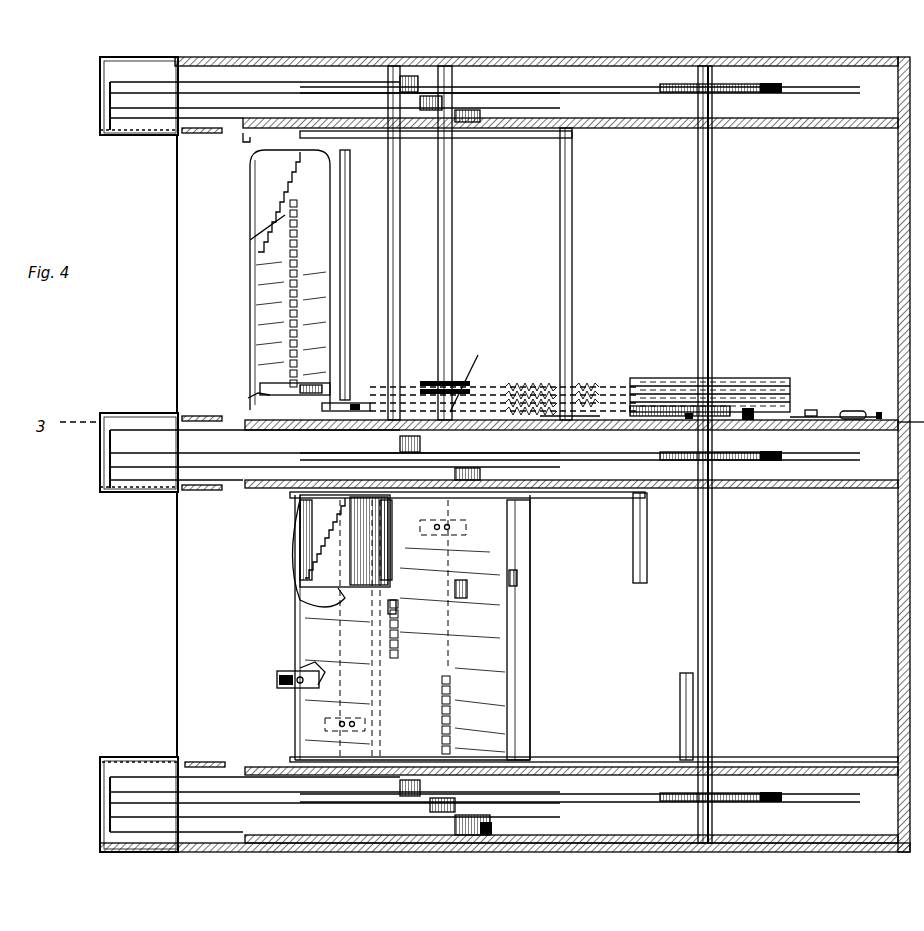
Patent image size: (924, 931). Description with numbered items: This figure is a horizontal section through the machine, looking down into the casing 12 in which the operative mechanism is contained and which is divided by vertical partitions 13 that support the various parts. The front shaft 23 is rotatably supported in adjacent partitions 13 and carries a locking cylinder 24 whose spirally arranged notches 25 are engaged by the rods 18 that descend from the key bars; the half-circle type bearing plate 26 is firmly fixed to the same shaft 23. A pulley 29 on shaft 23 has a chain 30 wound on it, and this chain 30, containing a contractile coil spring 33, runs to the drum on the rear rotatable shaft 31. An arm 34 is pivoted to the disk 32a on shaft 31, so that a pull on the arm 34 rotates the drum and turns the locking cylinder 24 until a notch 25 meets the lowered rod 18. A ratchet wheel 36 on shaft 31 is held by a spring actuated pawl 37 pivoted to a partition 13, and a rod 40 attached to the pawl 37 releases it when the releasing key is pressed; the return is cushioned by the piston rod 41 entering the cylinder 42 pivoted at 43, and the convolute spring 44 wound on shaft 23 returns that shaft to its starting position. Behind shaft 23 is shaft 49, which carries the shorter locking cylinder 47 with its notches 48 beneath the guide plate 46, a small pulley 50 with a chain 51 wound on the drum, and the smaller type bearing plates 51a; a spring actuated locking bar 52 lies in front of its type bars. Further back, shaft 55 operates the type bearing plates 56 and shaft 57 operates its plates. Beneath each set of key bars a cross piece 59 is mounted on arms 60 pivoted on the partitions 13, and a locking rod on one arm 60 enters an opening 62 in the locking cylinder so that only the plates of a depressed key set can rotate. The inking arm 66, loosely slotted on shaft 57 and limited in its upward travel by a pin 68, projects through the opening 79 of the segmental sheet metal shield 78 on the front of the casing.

The casing 12 is at (897, 612).
The vertical partitions 13 is at (840, 118).
The rod 18 is at (290, 312).
The shaft 23 is at (260, 395).
The locking cylinder 24 is at (262, 186).
The notches 25 is at (279, 202).
The type bearing plate 26 is at (140, 95).
The pulley 29 is at (314, 384).
The chain 30 is at (478, 395).
The rotatable shaft 31 is at (712, 309).
The disk 32a is at (780, 90).
The contractile coil spring 33 is at (532, 386).
The arm 34 is at (522, 96).
The ratchet wheel 36 is at (747, 421).
The spring actuated pawl 37 is at (689, 421).
The rod 40 is at (528, 430).
The piston rod 41 is at (813, 410).
The cylinder 42 is at (852, 411).
The pivot 43 is at (878, 420).
The convolute spring 44 is at (288, 683).
The guide plate 46 is at (345, 622).
The locking cylinder 47 is at (345, 541).
The notches 48 is at (330, 522).
The shaft 49 is at (383, 282).
The small pulley 50 is at (350, 403).
The chain 51 is at (486, 377).
The type bearing plates 51a is at (118, 96).
The spring actuated locking bar 52 is at (738, 382).
The shaft 55 is at (388, 262).
The type bearing plates 56 is at (118, 122).
The shaft 57 is at (452, 258).
The cross piece 59 is at (572, 282).
The arms 60 is at (548, 138).
The opening 62 is at (250, 142).
The arm 66 is at (180, 132).
The pin 68 is at (196, 95).
The segmental sheet metal shield 78 is at (118, 130).
The opening 79 is at (118, 110).